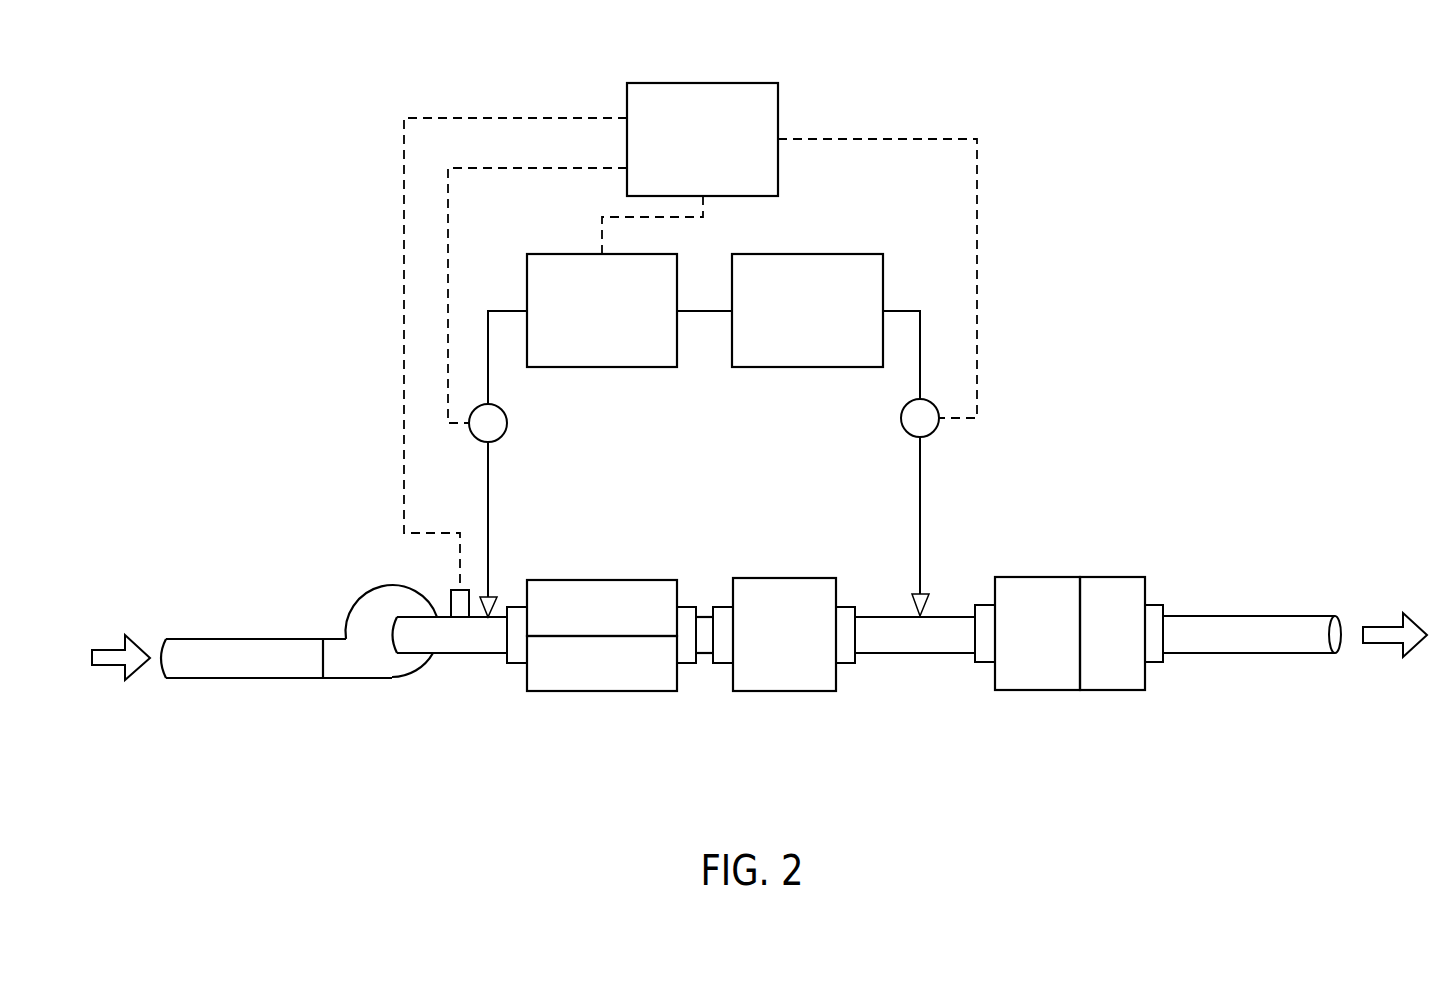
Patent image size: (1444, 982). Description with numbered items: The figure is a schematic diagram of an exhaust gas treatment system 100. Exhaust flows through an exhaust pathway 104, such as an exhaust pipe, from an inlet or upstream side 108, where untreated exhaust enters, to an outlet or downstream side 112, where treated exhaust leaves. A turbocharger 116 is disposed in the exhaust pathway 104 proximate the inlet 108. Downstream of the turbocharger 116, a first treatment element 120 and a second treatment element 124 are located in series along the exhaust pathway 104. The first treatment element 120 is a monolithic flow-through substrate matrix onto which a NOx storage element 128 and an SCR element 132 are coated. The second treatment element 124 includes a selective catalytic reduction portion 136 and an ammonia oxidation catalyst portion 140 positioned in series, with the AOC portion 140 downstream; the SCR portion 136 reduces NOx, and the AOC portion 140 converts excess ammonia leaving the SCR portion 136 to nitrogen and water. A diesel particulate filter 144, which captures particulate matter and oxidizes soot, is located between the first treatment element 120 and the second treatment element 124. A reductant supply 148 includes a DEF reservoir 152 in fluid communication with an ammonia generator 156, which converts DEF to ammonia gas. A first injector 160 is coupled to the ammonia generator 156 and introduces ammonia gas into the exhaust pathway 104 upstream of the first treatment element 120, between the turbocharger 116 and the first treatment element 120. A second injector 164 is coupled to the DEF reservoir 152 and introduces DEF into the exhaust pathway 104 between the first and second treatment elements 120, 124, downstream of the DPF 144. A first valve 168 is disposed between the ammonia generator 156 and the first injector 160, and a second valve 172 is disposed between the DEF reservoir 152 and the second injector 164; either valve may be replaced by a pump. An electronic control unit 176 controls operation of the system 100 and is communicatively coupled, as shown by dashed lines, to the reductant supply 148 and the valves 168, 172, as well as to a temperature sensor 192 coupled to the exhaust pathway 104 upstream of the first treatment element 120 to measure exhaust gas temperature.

The exhaust gas treatment system 100 is at (317, 75).
The exhaust pathway 104 is at (275, 687).
The inlet or upstream side 108 is at (247, 640).
The outlet or downstream side 112 is at (1240, 616).
The turbocharger 116 is at (391, 584).
The first treatment element 120 is at (613, 662).
The second treatment element 124 is at (1086, 643).
The NOx storage element 128 is at (601, 580).
The SCR element 132 is at (628, 691).
The selective catalytic reduction (SCR) portion 136 is at (1037, 691).
The ammonia oxidation catalyst (AOC) portion 140 is at (1112, 691).
The diesel particulate filter (DPF) 144 is at (783, 691).
The reductant supply 148 is at (771, 429).
The diesel exhaust fluid (DEF) reservoir 152 is at (808, 254).
The ammonia generator 156 is at (601, 368).
The first injector 160 is at (492, 586).
The second injector 164 is at (923, 587).
The first valve 168 is at (507, 424).
The second valve 172 is at (901, 418).
The electronic control unit (ECU) 176 is at (703, 83).
The temperature sensor 192 is at (448, 590).